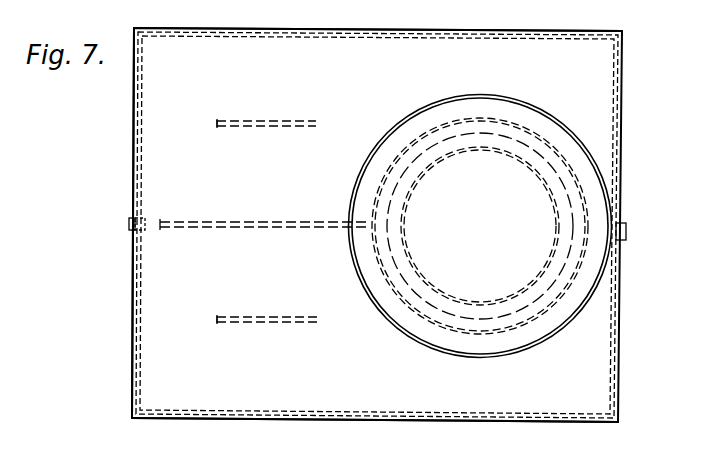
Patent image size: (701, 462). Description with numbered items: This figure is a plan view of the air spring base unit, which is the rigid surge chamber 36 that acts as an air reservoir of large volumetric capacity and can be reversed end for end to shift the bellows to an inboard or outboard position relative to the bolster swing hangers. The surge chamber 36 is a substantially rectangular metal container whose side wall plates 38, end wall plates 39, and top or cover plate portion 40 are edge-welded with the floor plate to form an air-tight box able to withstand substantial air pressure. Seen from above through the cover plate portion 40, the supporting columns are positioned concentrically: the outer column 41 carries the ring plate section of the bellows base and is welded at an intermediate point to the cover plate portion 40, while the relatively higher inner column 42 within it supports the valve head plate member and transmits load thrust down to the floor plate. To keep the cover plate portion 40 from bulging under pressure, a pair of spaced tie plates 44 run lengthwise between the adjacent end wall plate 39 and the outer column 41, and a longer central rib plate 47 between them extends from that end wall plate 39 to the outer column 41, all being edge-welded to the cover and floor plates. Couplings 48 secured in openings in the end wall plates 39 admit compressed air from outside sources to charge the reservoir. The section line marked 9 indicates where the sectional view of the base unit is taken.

The surge chamber 36 is at (137, 331).
The side wall plates 38 is at (265, 28).
The end wall plates 39 is at (133, 290).
The cover plate portion 40 is at (480, 219).
The outer column 41 is at (376, 250).
The inner column 42 is at (402, 214).
The tie plates 44 is at (229, 120).
The central rib plate 47 is at (180, 223).
The couplings 48 is at (129, 225).
The section line 9- 9 is at (508, 229).